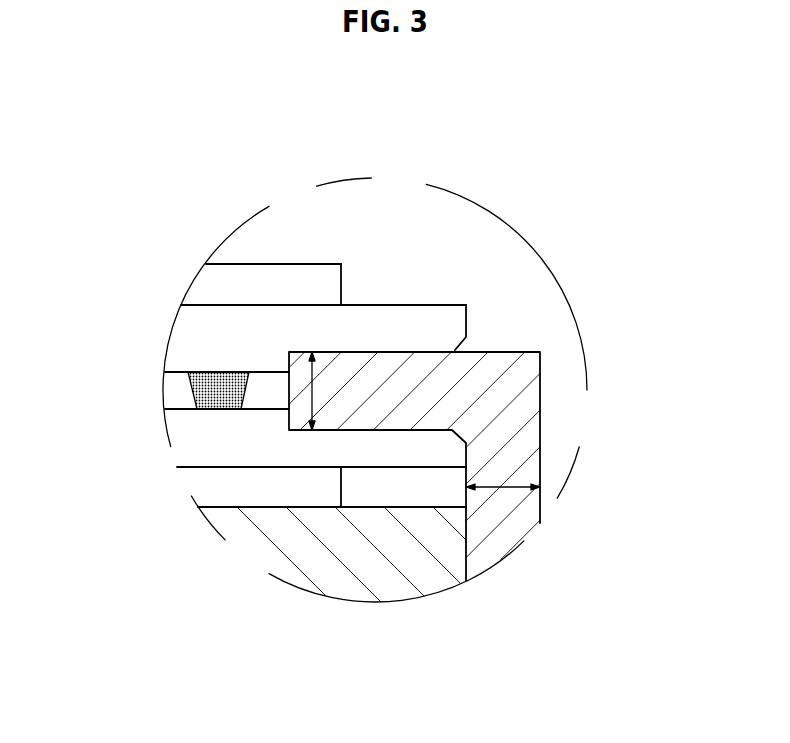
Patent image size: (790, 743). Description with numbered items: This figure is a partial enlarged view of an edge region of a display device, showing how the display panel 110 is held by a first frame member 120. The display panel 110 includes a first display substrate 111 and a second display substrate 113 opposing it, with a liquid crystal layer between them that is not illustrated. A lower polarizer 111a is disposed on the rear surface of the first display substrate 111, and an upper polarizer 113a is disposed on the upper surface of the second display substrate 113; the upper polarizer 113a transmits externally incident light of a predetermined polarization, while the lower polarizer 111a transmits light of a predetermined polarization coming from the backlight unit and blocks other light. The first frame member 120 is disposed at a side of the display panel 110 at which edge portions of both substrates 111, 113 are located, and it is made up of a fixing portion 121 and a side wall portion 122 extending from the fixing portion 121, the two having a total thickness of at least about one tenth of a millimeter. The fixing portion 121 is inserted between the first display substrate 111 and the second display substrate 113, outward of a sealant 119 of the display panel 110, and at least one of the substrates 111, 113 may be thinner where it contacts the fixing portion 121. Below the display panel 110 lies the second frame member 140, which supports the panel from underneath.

The display panel 110 is at (305, 127).
The first display substrate 111 is at (395, 452).
The lower polarizer 111a is at (222, 487).
The second display substrate 113 is at (313, 322).
The upper polarizer 113a is at (223, 285).
The sealant 119 is at (217, 370).
The first frame member 120 is at (647, 330).
The fixing portion 121 is at (413, 368).
The side wall portion 122 is at (513, 448).
The second frame member 140 is at (347, 555).